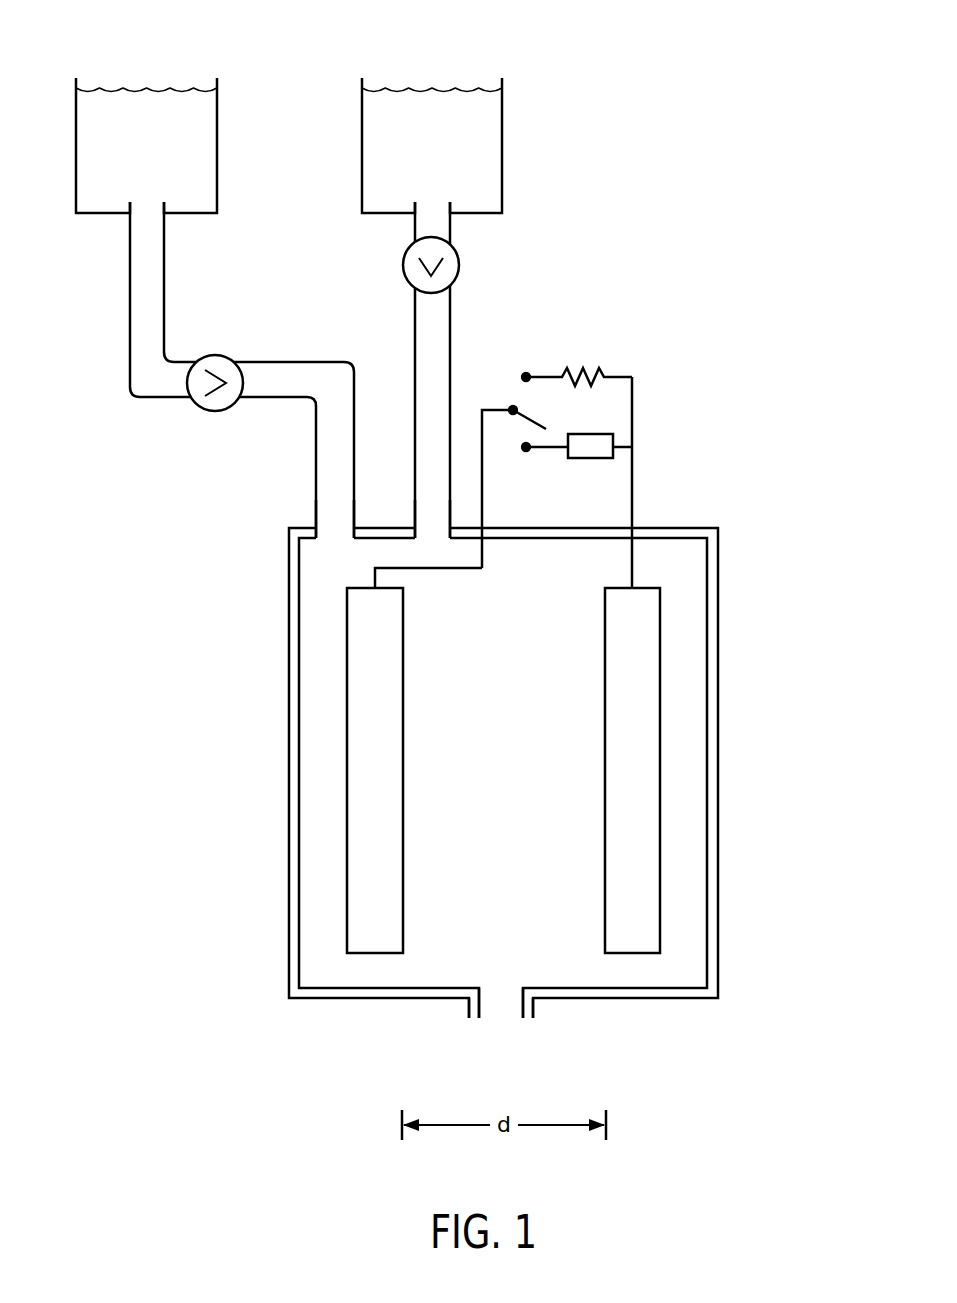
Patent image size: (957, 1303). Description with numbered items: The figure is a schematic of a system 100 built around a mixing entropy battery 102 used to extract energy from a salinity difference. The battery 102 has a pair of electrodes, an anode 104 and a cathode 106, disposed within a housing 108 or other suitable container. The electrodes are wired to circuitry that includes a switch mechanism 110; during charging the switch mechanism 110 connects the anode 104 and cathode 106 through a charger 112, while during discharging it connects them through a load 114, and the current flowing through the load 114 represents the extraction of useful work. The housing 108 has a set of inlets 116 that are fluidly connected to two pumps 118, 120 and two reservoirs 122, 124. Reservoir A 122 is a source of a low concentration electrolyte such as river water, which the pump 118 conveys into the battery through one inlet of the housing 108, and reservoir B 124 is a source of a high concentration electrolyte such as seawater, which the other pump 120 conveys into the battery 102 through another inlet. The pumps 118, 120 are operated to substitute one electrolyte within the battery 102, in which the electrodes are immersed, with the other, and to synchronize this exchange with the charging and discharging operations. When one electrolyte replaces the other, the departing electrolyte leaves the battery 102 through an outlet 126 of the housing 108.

The system 100 is at (732, 68).
The mixing entropy battery 102 is at (264, 770).
The anode 104 is at (661, 862).
The cathode 106 is at (347, 867).
The housing 108 is at (719, 685).
The switch mechanism 110 is at (546, 417).
The charger 112 is at (609, 429).
The load 114 is at (586, 361).
The set of inlets 116 is at (430, 540).
The pump 118 is at (201, 409).
The pump 120 is at (461, 254).
The reservoir A 122 is at (219, 109).
The reservoir B 124 is at (360, 106).
The outlet 126 is at (495, 1025).